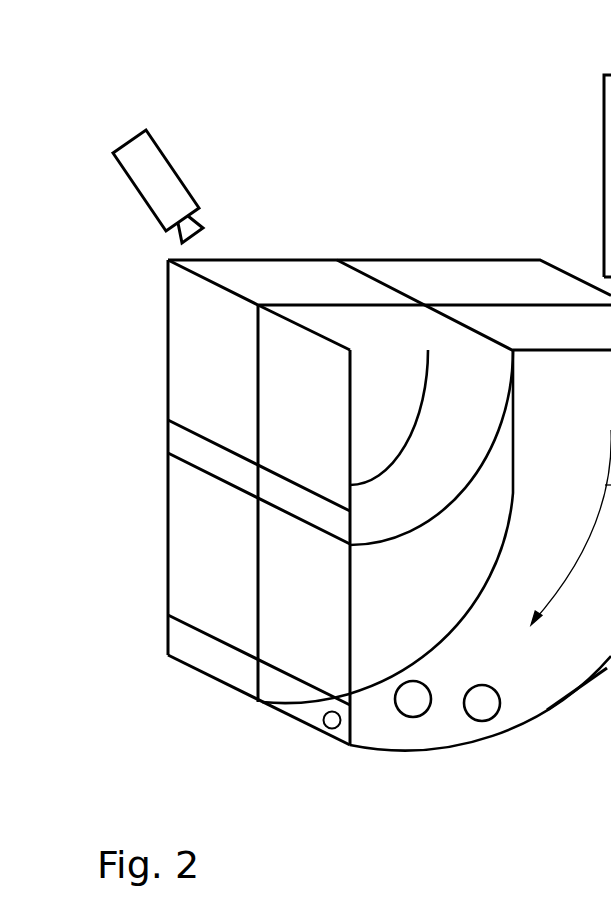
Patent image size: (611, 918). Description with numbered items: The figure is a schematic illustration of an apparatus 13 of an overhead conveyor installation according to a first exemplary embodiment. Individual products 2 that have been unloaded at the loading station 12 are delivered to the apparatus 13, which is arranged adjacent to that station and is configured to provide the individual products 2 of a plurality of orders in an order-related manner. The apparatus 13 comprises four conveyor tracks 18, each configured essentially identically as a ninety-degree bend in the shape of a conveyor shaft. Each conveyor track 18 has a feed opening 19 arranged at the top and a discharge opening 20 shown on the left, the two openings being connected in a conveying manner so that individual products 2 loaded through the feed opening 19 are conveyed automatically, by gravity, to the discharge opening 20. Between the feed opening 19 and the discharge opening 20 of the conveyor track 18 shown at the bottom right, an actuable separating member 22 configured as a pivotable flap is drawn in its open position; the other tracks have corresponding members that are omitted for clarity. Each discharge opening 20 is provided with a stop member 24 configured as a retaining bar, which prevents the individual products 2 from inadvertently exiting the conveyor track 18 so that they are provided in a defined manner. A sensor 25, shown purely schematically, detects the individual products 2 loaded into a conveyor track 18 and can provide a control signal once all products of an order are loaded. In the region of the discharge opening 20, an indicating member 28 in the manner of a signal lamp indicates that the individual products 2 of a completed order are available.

The individual products 2 is at (480, 710).
The loading station 12 is at (428, 68).
The apparatus 13 is at (290, 218).
The conveyor track 18 is at (456, 380).
The feed opening 19 is at (278, 295).
The discharge opening 20 is at (196, 394).
The separating member 22 is at (609, 697).
The stop member 24 is at (300, 508).
The sensor 25 is at (157, 167).
The indicating member 28 is at (332, 729).